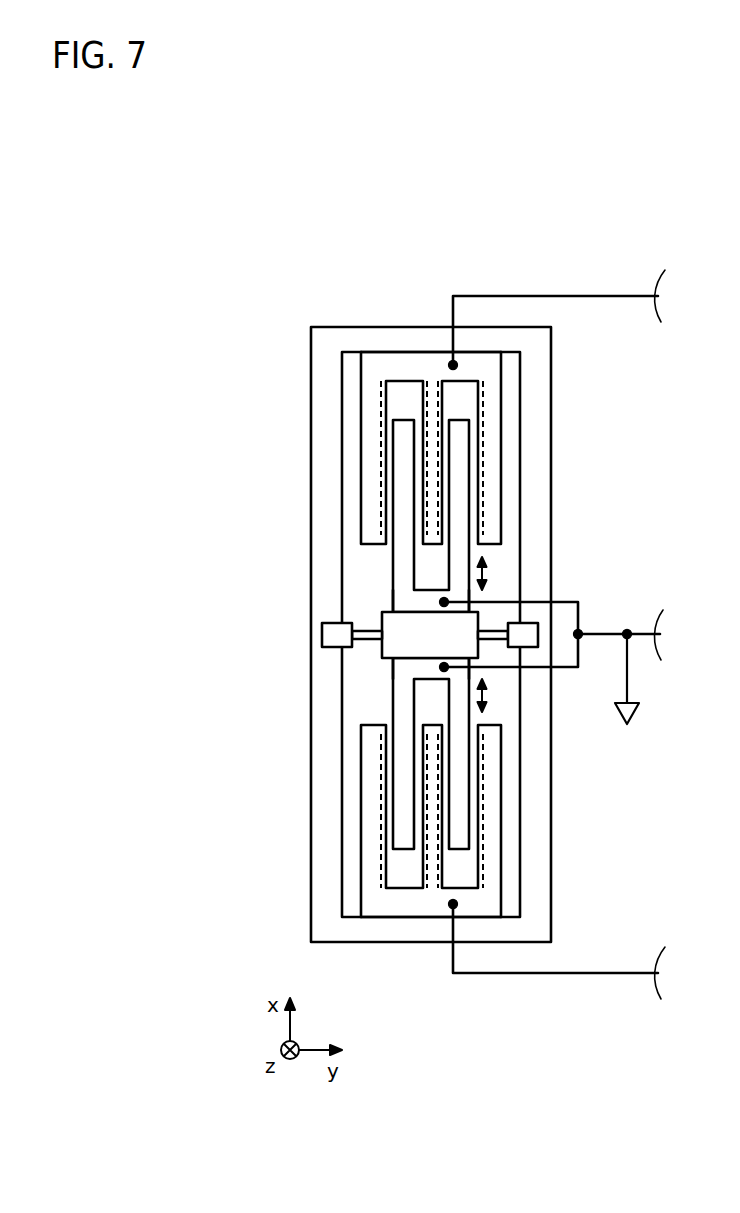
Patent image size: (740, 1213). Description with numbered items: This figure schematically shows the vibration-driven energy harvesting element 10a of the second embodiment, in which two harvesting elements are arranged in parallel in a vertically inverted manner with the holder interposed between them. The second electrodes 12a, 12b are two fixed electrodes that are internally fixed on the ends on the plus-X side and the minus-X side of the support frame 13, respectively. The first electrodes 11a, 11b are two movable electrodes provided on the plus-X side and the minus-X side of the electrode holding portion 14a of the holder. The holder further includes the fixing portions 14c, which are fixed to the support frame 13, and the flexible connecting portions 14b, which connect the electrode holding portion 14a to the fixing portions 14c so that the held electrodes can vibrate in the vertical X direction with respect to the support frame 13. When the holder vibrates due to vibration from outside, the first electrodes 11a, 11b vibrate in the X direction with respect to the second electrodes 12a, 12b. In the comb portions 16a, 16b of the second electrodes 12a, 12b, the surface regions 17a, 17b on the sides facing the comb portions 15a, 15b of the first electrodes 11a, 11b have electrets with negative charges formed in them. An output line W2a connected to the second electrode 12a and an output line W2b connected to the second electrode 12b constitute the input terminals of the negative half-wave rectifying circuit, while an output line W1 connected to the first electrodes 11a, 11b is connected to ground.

The vibration-driven energy harvesting element 10a is at (322, 318).
The first electrode 11a is at (405, 597).
The first electrode 11b is at (405, 672).
The second electrode 12a is at (418, 365).
The second electrode 12b is at (397, 902).
The support frame 13 is at (323, 501).
The electrode holding portion 14a is at (392, 627).
The connecting portion 14b is at (368, 640).
The fixing portion 14c is at (325, 633).
The comb portion 15a is at (403, 543).
The comb portion 15b is at (403, 723).
The comb portion 16a is at (370, 462).
The comb portion 16b is at (370, 808).
The surface region 17a is at (382, 405).
The surface region 17b is at (382, 864).
The output line W1 is at (607, 632).
The output line W2a is at (577, 296).
The output line W2b is at (578, 973).